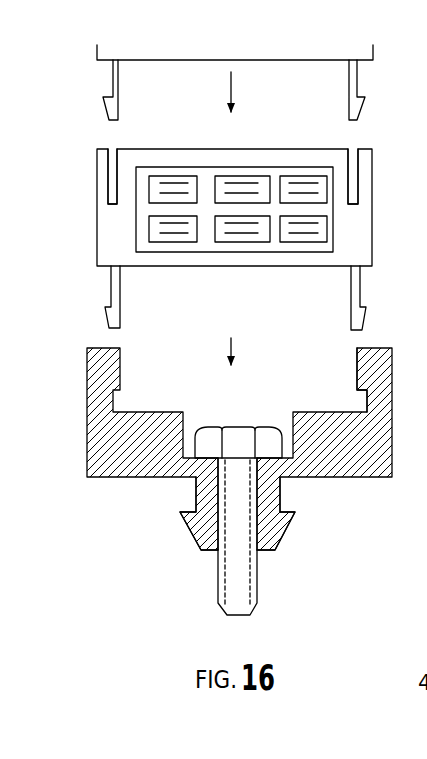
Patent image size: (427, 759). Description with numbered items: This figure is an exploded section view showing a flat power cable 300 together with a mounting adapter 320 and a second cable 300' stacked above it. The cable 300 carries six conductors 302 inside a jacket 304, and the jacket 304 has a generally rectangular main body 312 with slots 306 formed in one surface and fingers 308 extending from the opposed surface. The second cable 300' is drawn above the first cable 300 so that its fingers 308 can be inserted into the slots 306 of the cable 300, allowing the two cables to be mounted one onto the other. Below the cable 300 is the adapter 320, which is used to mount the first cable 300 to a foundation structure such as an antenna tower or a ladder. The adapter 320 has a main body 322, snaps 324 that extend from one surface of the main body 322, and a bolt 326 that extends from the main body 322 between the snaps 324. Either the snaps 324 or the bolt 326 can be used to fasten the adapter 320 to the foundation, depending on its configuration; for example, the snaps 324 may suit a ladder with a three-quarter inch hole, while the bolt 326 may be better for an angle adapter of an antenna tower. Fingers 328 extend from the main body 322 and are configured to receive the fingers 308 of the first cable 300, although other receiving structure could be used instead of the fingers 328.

The flat power cable 300 is at (225, 221).
The second cable 300' is at (235, 47).
The conductors 302 is at (155, 226).
The jacket 304 is at (105, 257).
The slots 306 is at (112, 148).
The fingers 308 is at (355, 108).
The main body 312 is at (102, 222).
The adapter 320 is at (239, 501).
The main body 322 is at (347, 473).
The snaps 324 is at (283, 528).
The bolt 326 is at (240, 597).
The fingers 328 is at (366, 380).